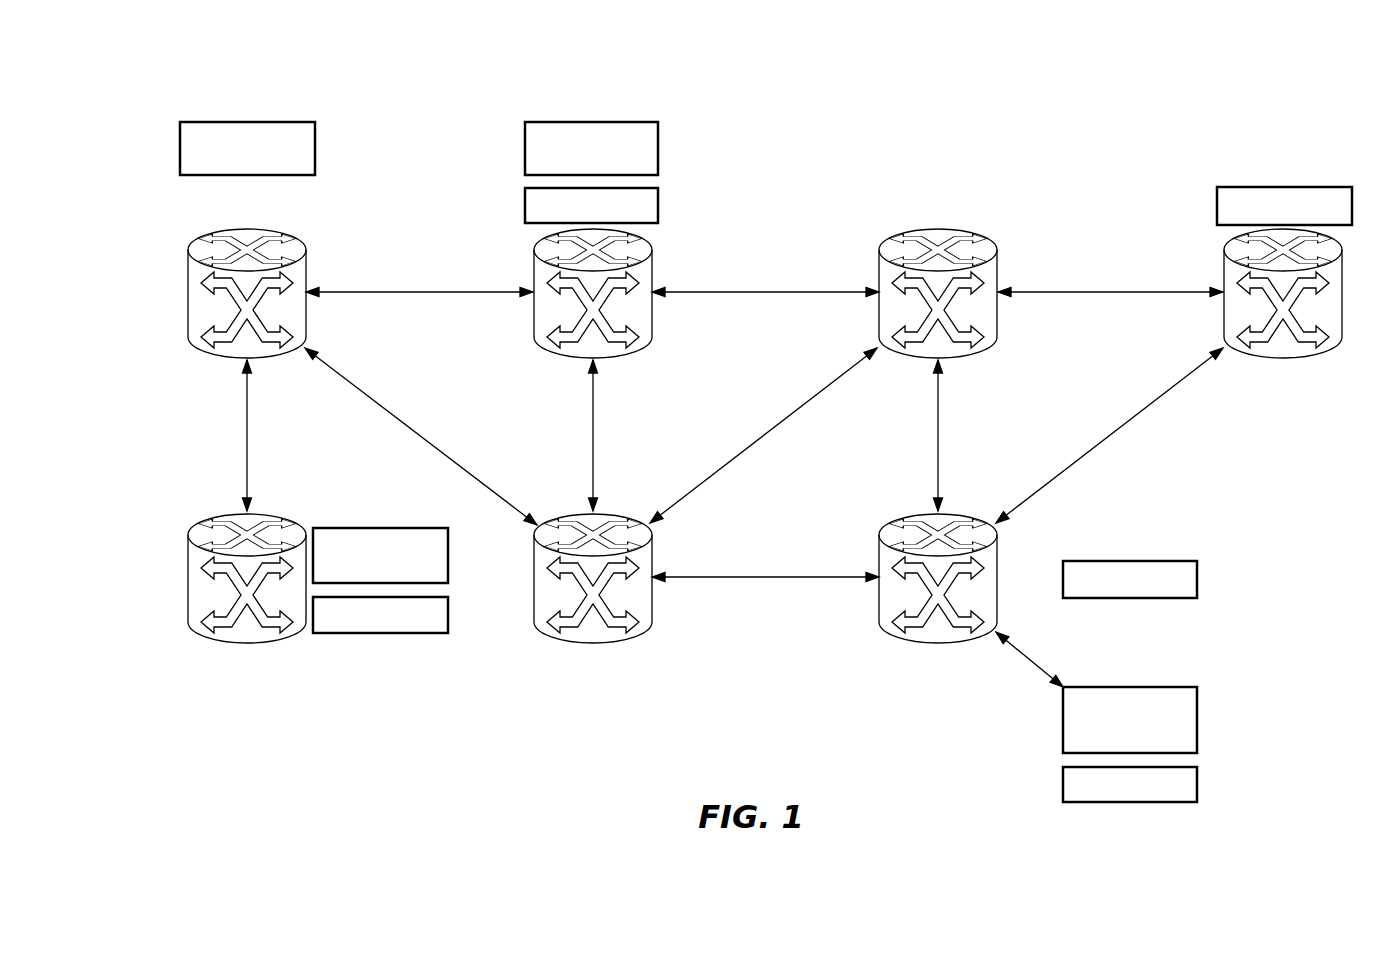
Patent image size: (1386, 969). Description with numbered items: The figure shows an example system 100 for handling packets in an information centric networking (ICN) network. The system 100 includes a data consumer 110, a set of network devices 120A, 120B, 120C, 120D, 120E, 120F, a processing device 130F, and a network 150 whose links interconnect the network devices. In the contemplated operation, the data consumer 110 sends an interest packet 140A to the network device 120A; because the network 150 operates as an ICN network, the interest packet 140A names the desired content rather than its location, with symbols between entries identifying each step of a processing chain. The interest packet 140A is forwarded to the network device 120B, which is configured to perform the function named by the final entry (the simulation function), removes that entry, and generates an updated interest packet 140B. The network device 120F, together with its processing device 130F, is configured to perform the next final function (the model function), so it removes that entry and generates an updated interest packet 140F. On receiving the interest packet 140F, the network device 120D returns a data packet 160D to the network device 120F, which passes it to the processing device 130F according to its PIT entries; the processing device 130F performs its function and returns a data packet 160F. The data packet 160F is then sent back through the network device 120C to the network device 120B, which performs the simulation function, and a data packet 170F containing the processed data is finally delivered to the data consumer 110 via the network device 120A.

The system 100 is at (1224, 100).
The data consumer 110 is at (188, 596).
The network device 120A is at (188, 310).
The network device 120B is at (533, 310).
The network device 120C is at (879, 310).
The network device 120D is at (1223, 310).
The network device 120E is at (533, 596).
The network device 120F is at (879, 596).
The processing device 130F is at (1109, 731).
The interest packet 140A is at (401, 567).
The updated interest packet 140B is at (591, 148).
The updated interest packet 140F is at (1109, 591).
The network 150 is at (432, 290).
The data packet 160D is at (1263, 218).
The data packet 160F is at (1109, 796).
The data packet 170F is at (571, 217).